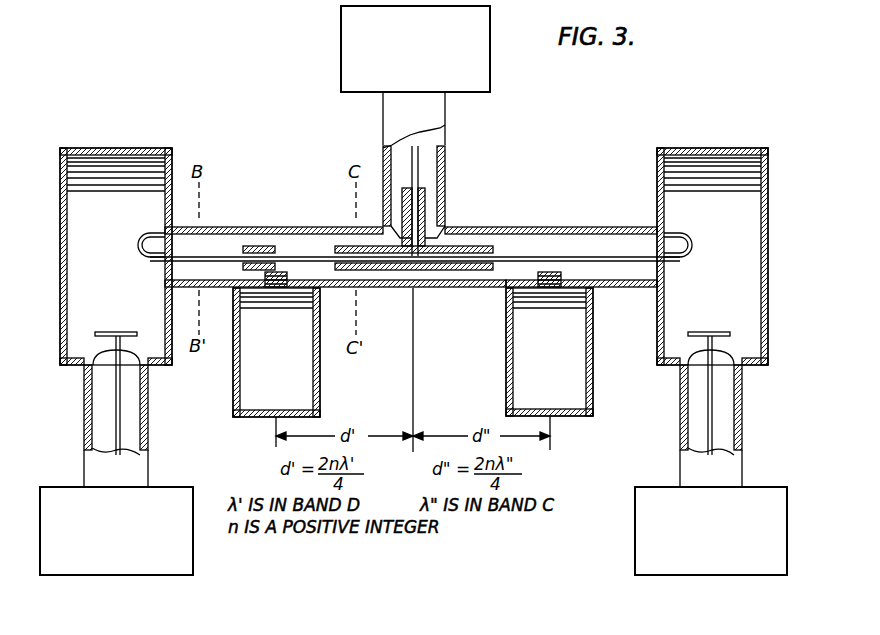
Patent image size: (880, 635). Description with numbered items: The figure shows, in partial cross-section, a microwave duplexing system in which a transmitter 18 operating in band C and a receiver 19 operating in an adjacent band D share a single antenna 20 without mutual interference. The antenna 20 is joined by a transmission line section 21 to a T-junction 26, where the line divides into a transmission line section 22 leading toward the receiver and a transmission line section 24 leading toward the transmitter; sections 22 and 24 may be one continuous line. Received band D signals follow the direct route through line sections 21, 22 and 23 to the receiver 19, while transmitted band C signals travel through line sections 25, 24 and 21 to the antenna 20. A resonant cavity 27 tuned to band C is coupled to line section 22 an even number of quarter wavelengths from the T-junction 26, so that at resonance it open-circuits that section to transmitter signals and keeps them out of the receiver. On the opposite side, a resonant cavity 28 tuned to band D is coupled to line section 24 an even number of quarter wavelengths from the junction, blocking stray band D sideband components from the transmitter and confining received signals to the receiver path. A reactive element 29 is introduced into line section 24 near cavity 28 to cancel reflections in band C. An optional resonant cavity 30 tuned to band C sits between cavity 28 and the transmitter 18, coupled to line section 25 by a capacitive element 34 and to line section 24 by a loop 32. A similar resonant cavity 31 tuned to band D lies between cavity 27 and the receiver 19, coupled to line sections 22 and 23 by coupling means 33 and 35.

The transmitter 18 is at (120, 577).
The receiver 19 is at (728, 577).
The antenna 20 is at (341, 47).
The transmission line section 21 is at (447, 150).
The transmission line section 22 is at (522, 233).
The transmission line section 23 is at (742, 405).
The transmission line section 24 is at (248, 235).
The transmission line section 25 is at (148, 436).
The T-junction 26 is at (418, 292).
The resonant cavity 27 is at (593, 363).
The resonant cavity 28 is at (320, 378).
The reactive element 29 is at (275, 250).
The resonant cavity 30 is at (72, 148).
The resonant cavity 31 is at (708, 148).
The loop 32 is at (152, 237).
The coupling means 33 is at (672, 243).
The capacitive element 34 is at (144, 338).
The coupling means 35 is at (738, 338).